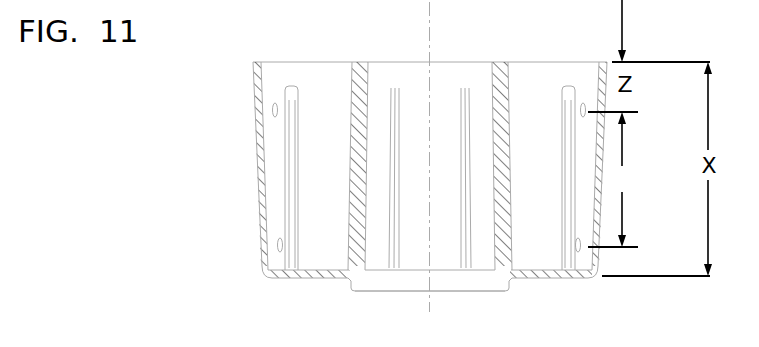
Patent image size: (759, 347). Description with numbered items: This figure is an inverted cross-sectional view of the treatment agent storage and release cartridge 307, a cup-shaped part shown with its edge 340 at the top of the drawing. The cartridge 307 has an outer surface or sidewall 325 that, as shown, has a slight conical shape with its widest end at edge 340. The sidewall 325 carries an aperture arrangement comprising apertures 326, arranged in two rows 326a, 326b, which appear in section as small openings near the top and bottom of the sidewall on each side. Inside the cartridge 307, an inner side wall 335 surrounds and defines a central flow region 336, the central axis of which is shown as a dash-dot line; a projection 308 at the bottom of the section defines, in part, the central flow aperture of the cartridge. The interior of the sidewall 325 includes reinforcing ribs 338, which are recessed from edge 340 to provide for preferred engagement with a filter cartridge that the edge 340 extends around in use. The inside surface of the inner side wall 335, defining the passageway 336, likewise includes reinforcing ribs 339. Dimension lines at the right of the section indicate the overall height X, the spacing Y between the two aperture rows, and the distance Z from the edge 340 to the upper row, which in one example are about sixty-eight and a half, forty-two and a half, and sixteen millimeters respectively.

The treatment agent storage and release cartridge 307 is at (645, 147).
The projection 308 is at (368, 292).
The outer surface or sidewall 325 is at (259, 185).
The apertures 326 is at (389, 195).
The first row of apertures 326a is at (280, 252).
The second row of apertures 326b is at (272, 113).
The inner side wall 335 is at (367, 88).
The central flow region 336 is at (431, 86).
The reinforcing ribs 338 is at (298, 172).
The reinforcing ribs 339 is at (398, 222).
The edge 340 is at (602, 62).